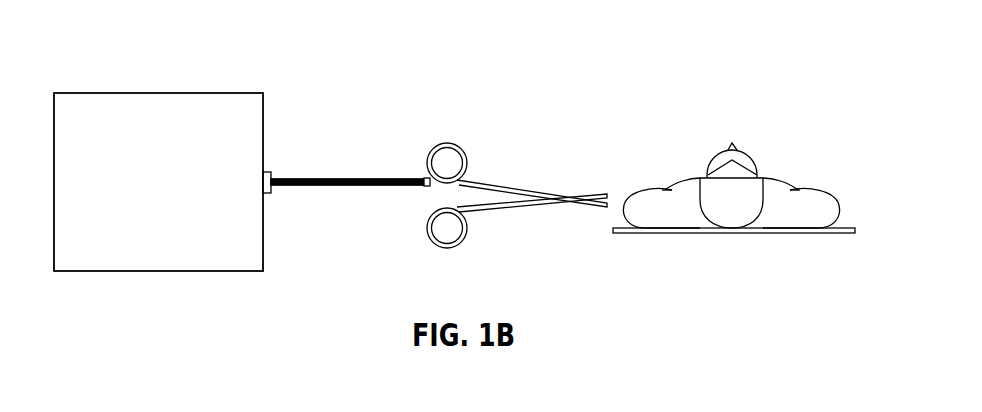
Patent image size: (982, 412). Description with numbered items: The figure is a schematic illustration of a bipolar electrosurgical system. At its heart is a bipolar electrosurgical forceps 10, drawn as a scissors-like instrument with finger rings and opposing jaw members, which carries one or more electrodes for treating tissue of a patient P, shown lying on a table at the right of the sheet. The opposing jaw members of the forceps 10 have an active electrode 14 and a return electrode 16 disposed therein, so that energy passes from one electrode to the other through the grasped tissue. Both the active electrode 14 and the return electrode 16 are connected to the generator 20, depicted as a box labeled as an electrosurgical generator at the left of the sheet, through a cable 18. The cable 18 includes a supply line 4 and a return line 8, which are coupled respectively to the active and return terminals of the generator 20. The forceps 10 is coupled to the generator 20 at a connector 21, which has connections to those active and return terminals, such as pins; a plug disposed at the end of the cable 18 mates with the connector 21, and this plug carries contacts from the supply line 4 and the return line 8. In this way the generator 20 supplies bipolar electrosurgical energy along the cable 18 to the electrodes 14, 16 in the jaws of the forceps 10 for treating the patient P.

The generator 20 is at (157, 93).
The connector 21 is at (265, 172).
The return line 8 is at (308, 179).
The supply line 4 is at (365, 186).
The cable 18 is at (365, 179).
The bipolar electrosurgical forceps 10 is at (533, 195).
The active electrode 14 is at (590, 192).
The return electrode 16 is at (590, 207).
The patient P is at (808, 173).